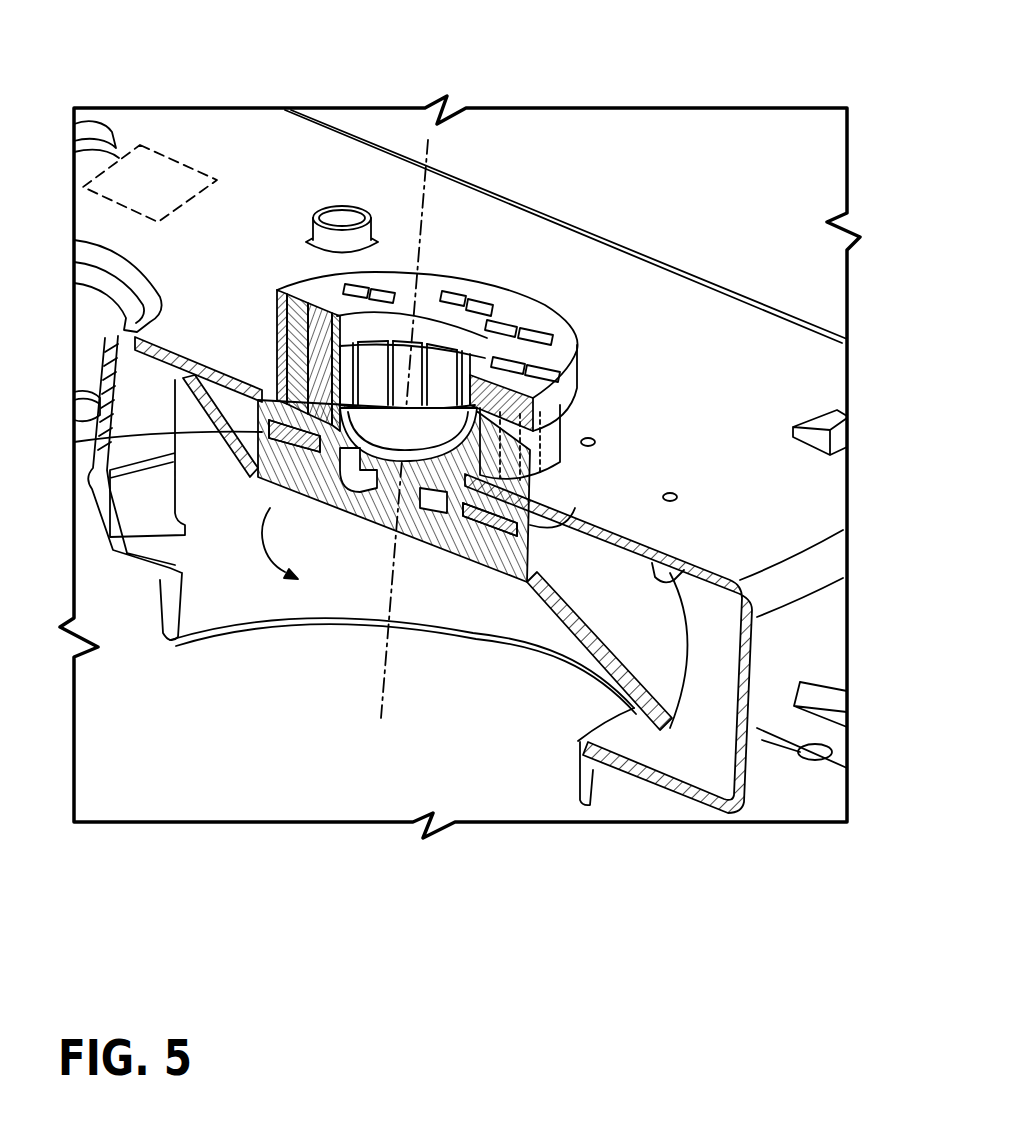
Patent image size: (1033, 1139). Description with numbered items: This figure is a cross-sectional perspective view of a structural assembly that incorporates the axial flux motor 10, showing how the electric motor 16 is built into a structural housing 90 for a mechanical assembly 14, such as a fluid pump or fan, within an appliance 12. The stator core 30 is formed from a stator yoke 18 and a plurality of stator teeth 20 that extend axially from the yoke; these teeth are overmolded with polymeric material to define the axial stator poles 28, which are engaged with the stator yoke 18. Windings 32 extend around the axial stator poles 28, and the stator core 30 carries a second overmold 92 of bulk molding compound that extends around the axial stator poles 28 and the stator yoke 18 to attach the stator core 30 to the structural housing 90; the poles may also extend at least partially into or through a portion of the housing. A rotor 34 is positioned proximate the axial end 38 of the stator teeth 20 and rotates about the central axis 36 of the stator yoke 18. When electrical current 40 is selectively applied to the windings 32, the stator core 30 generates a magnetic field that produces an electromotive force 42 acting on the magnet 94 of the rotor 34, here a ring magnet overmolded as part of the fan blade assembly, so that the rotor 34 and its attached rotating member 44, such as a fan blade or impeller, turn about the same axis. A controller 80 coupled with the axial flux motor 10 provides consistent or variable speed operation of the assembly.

The axial flux motor 10 is at (549, 262).
The appliance 12 is at (716, 203).
The mechanical assembly 14 is at (671, 846).
The electric motor 16 is at (640, 403).
The stator yoke 18 is at (580, 352).
The stator teeth 20 is at (288, 330).
The axial stator poles 28 is at (592, 463).
The stator core 30 is at (273, 241).
The winding 32 is at (276, 348).
The rotor 34 is at (300, 459).
The central axis 36 is at (418, 215).
The axial end 38 is at (338, 412).
The electrical current 40 is at (586, 433).
The electromotive force 42 is at (262, 540).
The rotating member 44 is at (331, 523).
The controller 80 is at (181, 150).
The structural housing 90 is at (774, 659).
The second overmold 92 is at (470, 478).
The magnet 94 is at (488, 560).